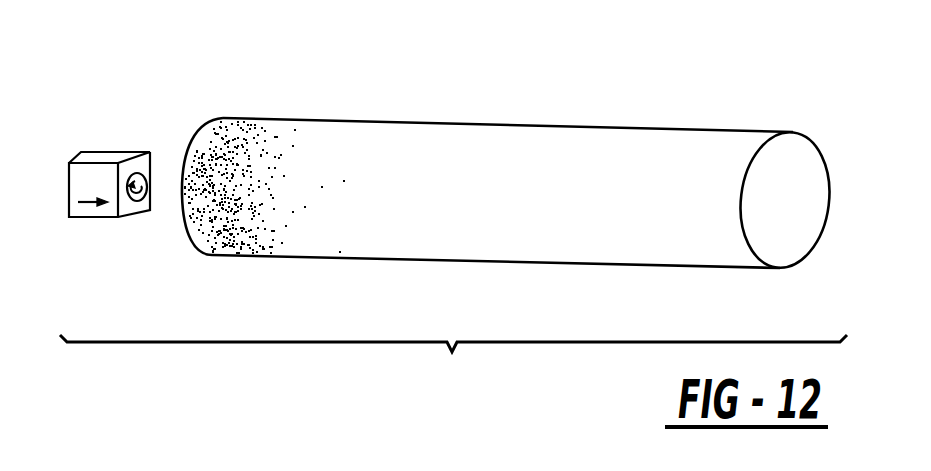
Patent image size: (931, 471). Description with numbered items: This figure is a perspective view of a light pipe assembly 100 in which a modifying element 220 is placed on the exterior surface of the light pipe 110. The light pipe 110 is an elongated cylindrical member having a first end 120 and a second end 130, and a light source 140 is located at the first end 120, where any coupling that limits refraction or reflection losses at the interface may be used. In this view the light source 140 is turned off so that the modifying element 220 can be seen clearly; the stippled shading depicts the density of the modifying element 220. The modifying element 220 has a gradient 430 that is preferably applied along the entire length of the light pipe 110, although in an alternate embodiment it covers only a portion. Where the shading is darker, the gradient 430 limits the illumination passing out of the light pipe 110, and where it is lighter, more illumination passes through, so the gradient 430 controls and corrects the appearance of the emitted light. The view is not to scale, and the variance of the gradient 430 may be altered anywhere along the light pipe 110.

The light pipe assembly 100 is at (453, 364).
The light pipe 110 is at (368, 119).
The first end 120 is at (166, 236).
The second end 130 is at (824, 227).
The light source 140 is at (92, 218).
The modifying element 220 is at (245, 155).
The gradient 430 is at (467, 219).